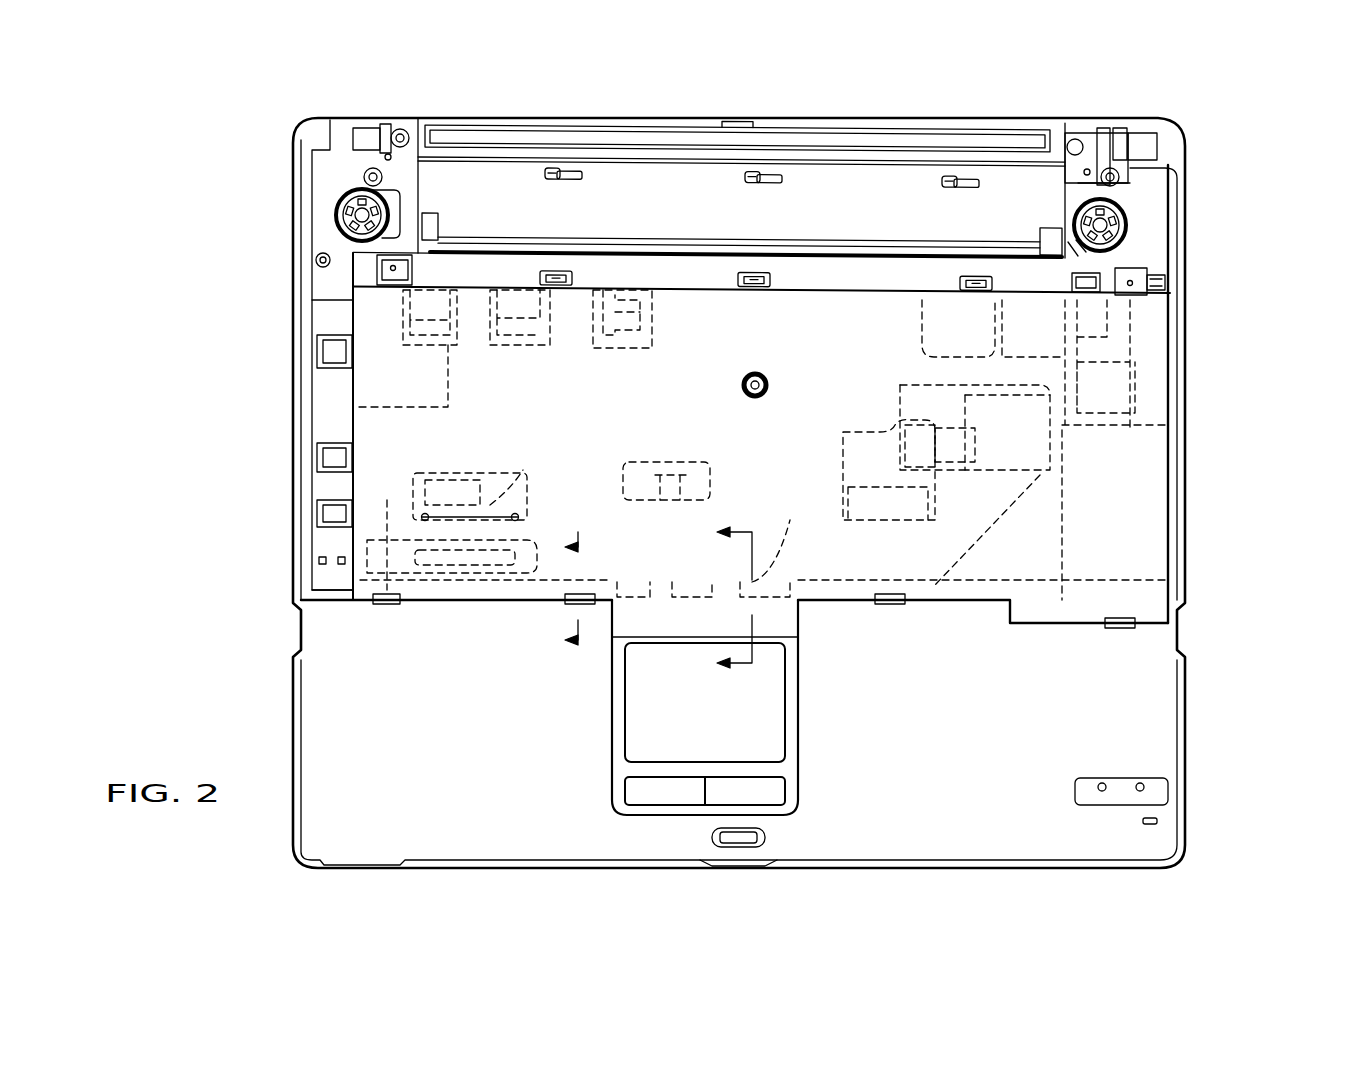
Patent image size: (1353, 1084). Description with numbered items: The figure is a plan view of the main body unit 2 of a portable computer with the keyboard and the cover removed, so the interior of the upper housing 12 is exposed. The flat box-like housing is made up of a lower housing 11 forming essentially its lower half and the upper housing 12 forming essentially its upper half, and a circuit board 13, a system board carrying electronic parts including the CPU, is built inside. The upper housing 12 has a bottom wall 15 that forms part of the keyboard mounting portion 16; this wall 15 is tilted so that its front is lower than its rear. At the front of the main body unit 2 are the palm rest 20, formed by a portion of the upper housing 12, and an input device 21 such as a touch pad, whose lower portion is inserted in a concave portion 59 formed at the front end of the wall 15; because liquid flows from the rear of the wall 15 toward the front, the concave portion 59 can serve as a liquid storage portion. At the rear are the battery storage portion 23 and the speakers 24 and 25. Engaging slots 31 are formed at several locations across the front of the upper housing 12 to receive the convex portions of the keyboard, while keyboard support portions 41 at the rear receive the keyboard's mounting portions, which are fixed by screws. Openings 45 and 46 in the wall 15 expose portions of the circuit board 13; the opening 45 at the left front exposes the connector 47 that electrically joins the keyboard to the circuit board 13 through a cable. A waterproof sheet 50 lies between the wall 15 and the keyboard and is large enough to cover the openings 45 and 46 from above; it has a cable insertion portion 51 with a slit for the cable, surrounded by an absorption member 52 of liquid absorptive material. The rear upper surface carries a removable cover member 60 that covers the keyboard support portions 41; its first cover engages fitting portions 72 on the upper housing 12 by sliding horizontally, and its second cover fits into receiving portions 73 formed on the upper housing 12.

The main body unit 2 is at (756, 499).
The lower housing 11 is at (1185, 569).
The upper housing 12 is at (1110, 675).
The circuit board 13 is at (1045, 455).
The bottom wall 15 is at (385, 433).
The keyboard mounting portion 16 is at (1098, 516).
The palm rest 20 is at (845, 860).
The input device 21 is at (760, 696).
The battery storage portion 23 is at (650, 142).
The speaker 24 is at (340, 220).
The speaker 25 is at (1128, 220).
The engaging slots 31 is at (388, 590).
The keyboard support portion 41 is at (388, 290).
The opening 45 is at (480, 480).
The openings 46 is at (652, 325).
The connector 47 is at (500, 600).
The waterproof sheet 50 is at (735, 394).
The cable insertion portion 51 is at (491, 514).
The absorption member 52 is at (530, 475).
The concave portion 59 is at (775, 537).
The cover member 60 is at (761, 177).
The fitting portions 72 is at (556, 168).
The receiving portions 73 is at (1115, 183).